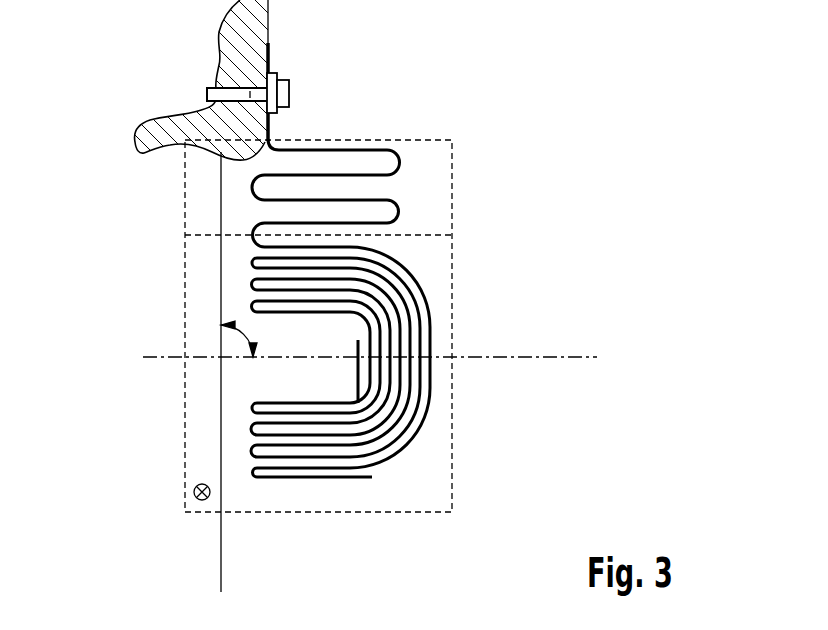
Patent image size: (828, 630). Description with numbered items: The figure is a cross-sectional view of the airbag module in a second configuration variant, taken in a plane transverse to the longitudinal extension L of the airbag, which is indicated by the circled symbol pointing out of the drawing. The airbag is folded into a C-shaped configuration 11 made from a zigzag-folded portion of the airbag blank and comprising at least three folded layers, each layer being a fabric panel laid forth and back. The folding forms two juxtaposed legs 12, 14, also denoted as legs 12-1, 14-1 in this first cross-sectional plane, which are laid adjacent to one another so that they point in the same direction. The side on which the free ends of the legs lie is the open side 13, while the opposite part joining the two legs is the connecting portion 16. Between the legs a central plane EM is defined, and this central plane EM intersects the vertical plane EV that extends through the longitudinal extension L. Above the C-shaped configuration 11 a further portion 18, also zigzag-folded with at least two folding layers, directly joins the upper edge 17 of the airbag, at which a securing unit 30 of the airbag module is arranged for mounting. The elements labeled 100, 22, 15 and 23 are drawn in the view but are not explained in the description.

The carrier / housing part 100 is at (257, 22).
The carrier plate 22 is at (271, 58).
The securing unit 30 is at (207, 91).
The upper edge 17 is at (272, 131).
The further portion 18 is at (452, 188).
The first winding region 15 is at (150, 206).
The C-shaped configuration 11 is at (307, 300).
The leg 12 is at (243, 299).
The leg in first cross-sectional plane 12-1 is at (200, 279).
The connecting portion 16 is at (450, 338).
The open side 13 is at (132, 392).
The leg 14 is at (243, 426).
The leg in first cross-sectional plane 14-1 is at (200, 432).
The arc section 23 is at (485, 462).
The central plane EM is at (590, 356).
The longitudinal extension L is at (195, 497).
The vertical plane EV is at (222, 573).